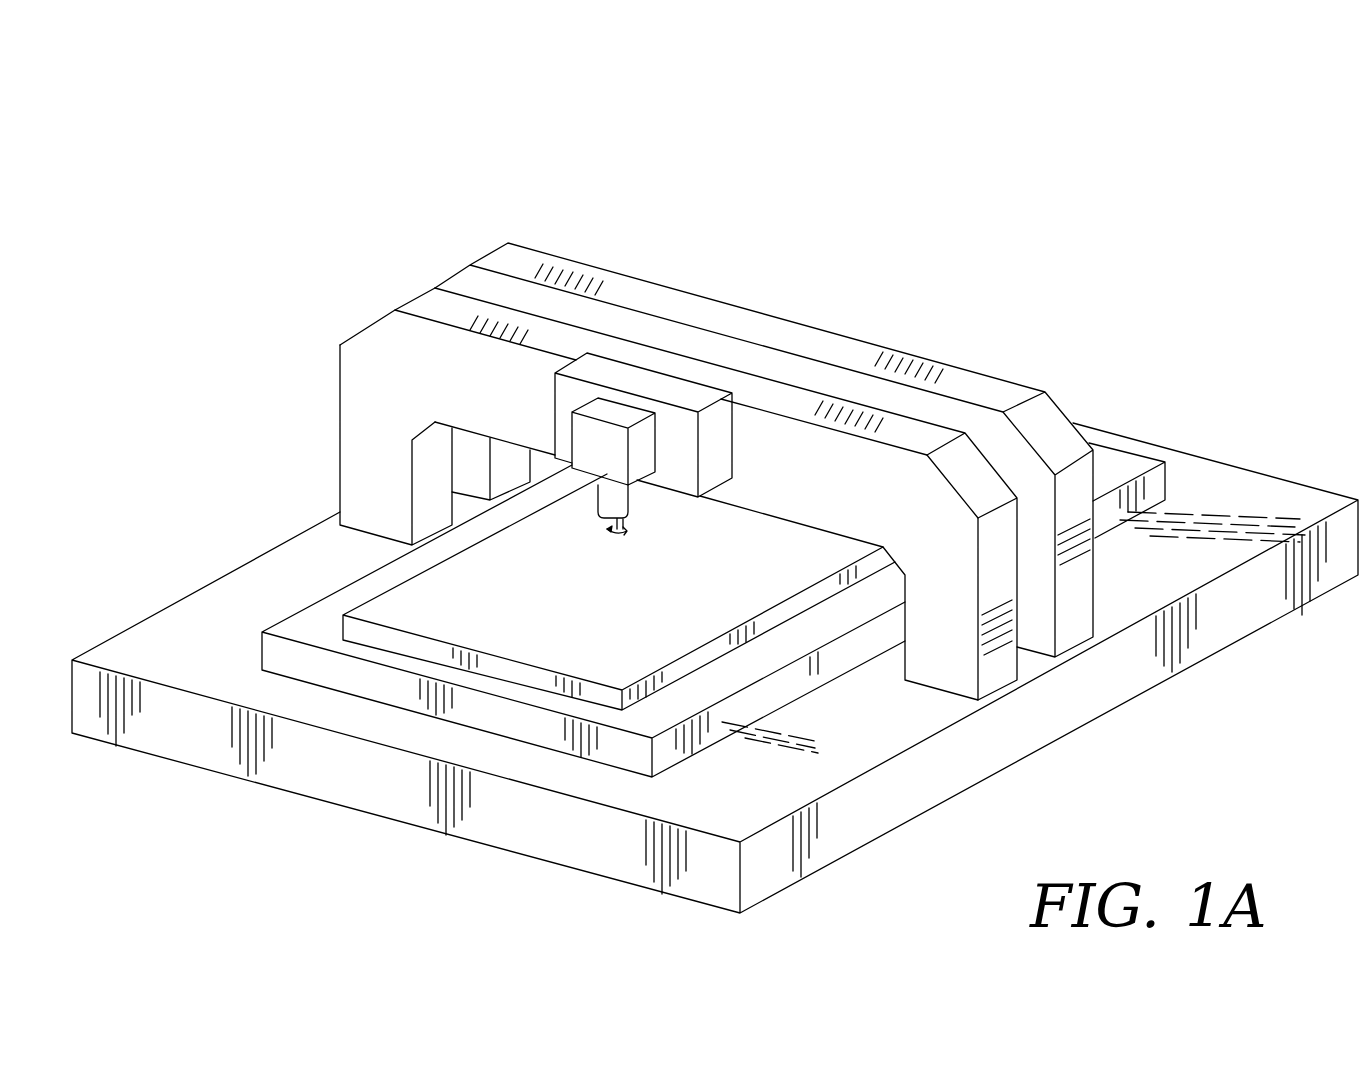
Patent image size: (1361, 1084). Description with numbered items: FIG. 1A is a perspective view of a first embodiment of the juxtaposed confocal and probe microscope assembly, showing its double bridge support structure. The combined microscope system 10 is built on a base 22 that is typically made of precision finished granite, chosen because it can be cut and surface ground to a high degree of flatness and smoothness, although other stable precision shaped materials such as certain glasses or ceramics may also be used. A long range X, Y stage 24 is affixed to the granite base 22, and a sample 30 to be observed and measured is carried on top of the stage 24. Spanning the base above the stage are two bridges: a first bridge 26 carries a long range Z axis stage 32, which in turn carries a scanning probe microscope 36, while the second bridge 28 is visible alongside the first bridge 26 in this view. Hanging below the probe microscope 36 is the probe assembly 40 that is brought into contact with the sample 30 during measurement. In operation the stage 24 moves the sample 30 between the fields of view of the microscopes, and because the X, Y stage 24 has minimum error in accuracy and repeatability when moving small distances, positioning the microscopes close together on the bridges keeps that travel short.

The combined microscope system 10 is at (303, 278).
The base 22 is at (305, 757).
The long range X, Y stage 24 is at (388, 688).
The first bridge 26 is at (420, 304).
The second bridge 28 is at (497, 260).
The sample 30 is at (493, 667).
The long range Z axis stage 32 is at (653, 383).
The scanning probe microscope 36 is at (582, 427).
The probe assembly 40 is at (608, 535).